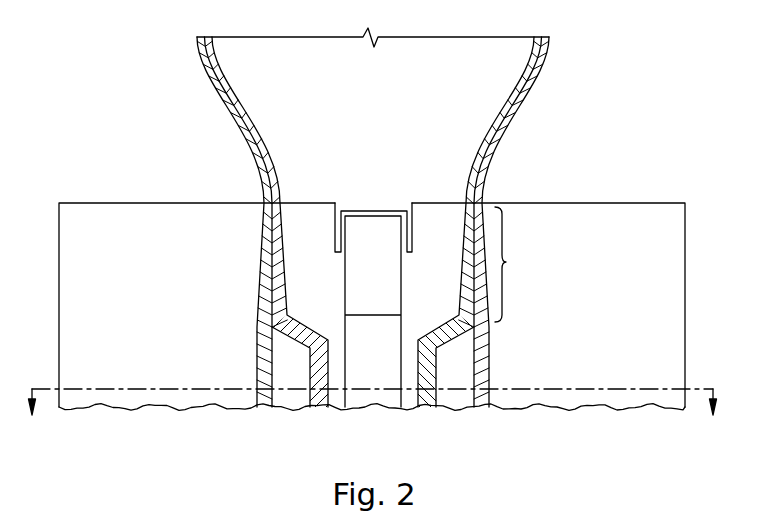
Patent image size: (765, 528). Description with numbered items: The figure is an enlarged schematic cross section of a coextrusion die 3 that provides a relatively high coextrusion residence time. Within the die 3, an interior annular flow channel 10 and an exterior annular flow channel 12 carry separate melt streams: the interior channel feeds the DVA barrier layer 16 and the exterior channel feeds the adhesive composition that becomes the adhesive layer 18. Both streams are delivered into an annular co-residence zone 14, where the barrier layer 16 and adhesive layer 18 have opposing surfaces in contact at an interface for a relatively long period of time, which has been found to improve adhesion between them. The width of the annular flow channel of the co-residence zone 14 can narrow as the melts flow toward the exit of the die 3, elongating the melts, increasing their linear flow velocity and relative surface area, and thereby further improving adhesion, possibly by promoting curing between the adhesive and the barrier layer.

The die 3 is at (161, 139).
The interior annular flow channel 10 is at (419, 372).
The exterior annular flow channel 12 is at (257, 366).
The annular co-residence zone 14 is at (506, 262).
The barrier layer 16 is at (514, 106).
The adhesive layer 18 is at (525, 99).